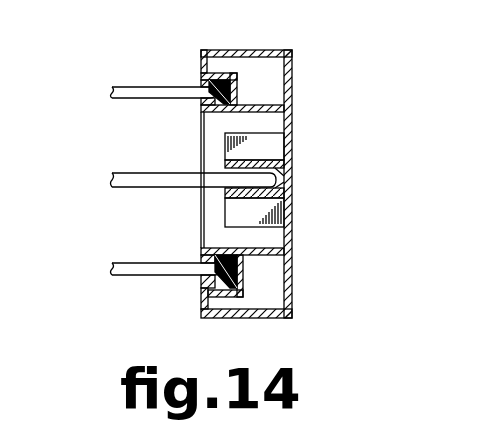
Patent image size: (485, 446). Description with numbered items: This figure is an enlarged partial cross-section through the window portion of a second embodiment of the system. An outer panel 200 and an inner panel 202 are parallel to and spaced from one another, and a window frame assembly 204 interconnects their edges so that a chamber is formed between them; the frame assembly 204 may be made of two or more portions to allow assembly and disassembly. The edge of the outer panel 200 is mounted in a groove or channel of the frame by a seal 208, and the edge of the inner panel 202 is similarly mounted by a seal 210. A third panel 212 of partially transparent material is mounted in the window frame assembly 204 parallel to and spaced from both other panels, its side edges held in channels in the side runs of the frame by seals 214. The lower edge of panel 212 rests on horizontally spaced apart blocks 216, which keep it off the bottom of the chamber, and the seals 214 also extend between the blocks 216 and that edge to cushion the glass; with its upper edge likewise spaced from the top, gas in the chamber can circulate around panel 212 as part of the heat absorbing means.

The outer panel 200 is at (143, 267).
The inner panel 202 is at (122, 86).
The window frame assembly 204 is at (290, 113).
The seal 208 is at (203, 286).
The seal 210 is at (222, 82).
The third panel 212 is at (140, 176).
The seal 214 is at (282, 182).
The block 216 is at (268, 148).